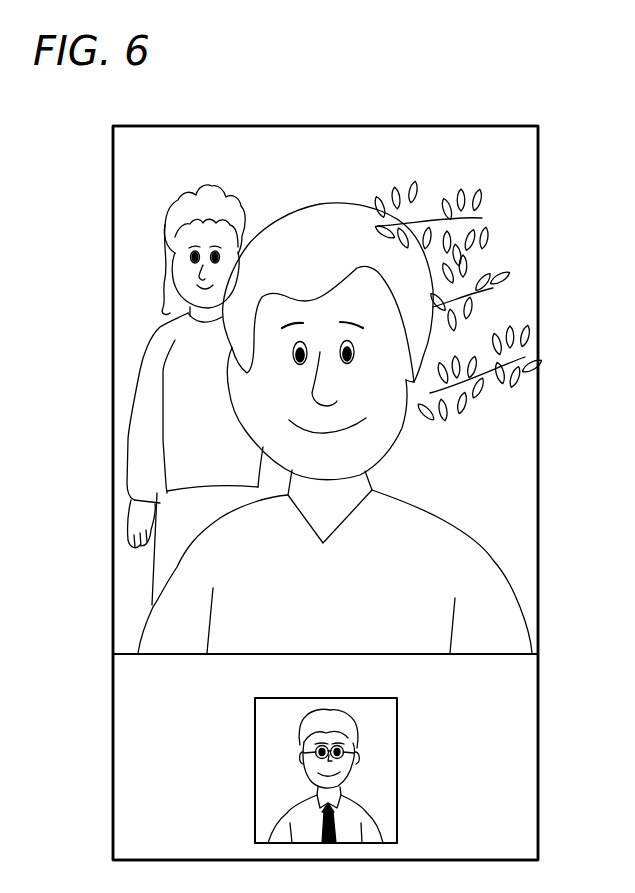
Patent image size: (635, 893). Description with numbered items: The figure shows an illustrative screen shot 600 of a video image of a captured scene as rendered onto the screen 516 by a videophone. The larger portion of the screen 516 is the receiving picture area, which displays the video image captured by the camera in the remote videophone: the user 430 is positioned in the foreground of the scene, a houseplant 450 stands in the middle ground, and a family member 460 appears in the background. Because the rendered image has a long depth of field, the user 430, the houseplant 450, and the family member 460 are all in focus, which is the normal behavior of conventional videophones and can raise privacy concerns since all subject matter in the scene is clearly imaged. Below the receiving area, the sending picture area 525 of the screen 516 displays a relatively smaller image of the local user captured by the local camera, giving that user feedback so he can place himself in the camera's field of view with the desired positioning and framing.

The screen shot 600 is at (335, 100).
The screen 516 is at (539, 183).
The family member 460 is at (153, 195).
The houseplant 450 is at (449, 174).
The user 430 is at (513, 535).
The sending picture area 525 is at (398, 738).